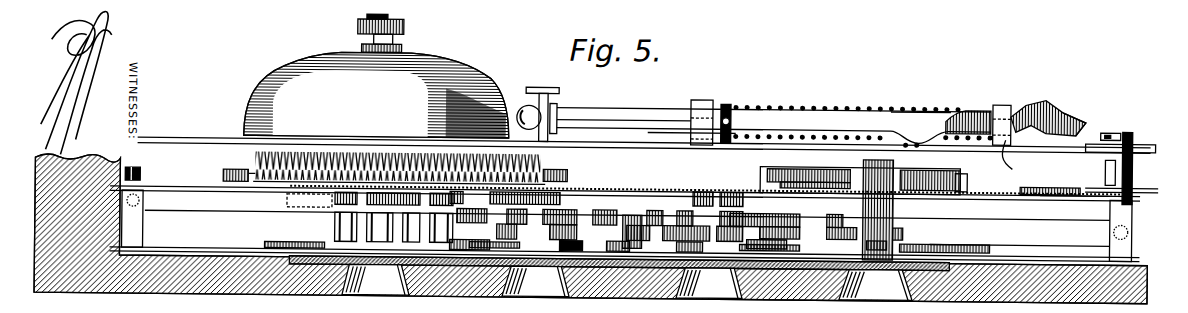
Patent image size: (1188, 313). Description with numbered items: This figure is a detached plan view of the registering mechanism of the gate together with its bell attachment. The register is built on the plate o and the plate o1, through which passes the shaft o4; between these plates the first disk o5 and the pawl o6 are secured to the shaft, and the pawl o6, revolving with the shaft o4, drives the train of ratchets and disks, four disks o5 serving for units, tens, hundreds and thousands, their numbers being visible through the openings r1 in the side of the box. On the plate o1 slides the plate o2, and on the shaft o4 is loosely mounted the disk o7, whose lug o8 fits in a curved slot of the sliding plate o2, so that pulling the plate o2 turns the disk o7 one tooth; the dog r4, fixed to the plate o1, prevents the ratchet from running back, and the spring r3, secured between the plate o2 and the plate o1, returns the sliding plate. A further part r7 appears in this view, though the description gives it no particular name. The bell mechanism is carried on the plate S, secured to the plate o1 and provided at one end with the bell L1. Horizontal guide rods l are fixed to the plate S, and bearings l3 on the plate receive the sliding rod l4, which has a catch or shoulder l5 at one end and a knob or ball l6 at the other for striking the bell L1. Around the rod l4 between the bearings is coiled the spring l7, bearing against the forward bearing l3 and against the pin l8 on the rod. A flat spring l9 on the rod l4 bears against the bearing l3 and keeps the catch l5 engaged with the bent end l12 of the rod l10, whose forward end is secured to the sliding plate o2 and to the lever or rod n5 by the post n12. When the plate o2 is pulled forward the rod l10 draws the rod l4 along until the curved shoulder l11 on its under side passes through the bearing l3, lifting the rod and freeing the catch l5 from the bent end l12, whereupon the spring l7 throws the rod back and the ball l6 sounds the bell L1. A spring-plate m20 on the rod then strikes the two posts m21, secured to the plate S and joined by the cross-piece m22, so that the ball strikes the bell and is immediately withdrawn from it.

The plate S is at (200, 137).
The bell L1 is at (377, 75).
The horizontal guide rods or strips l is at (620, 134).
The bearings l3 is at (851, 117).
The rod l4 is at (774, 126).
The catch or shoulder l5 is at (1068, 107).
The knob or ball l6 is at (521, 104).
The spring l7 is at (910, 101).
The pin or lug l8 is at (725, 98).
The flat spring l9 is at (880, 101).
The rod l10 is at (1122, 130).
The curved shoulder or enlargement l11 is at (924, 130).
The bent end l12 is at (1011, 159).
The spring-plate m20 is at (557, 108).
The posts m21 is at (548, 96).
The cross-piece m22 is at (542, 82).
The lever or rod n5 is at (1133, 170).
The post n12 is at (1134, 152).
The plate o is at (1030, 257).
The plate o1 is at (162, 185).
The sliding plate o2 is at (1050, 185).
The shaft o4 is at (890, 210).
The disk o5 is at (304, 246).
The pawl o6 is at (893, 224).
The disk o7 is at (988, 184).
The lug o8 is at (912, 170).
The openings r1 is at (627, 282).
The spring r3 is at (254, 160).
The dog r4 is at (801, 178).
The block r7 is at (962, 170).